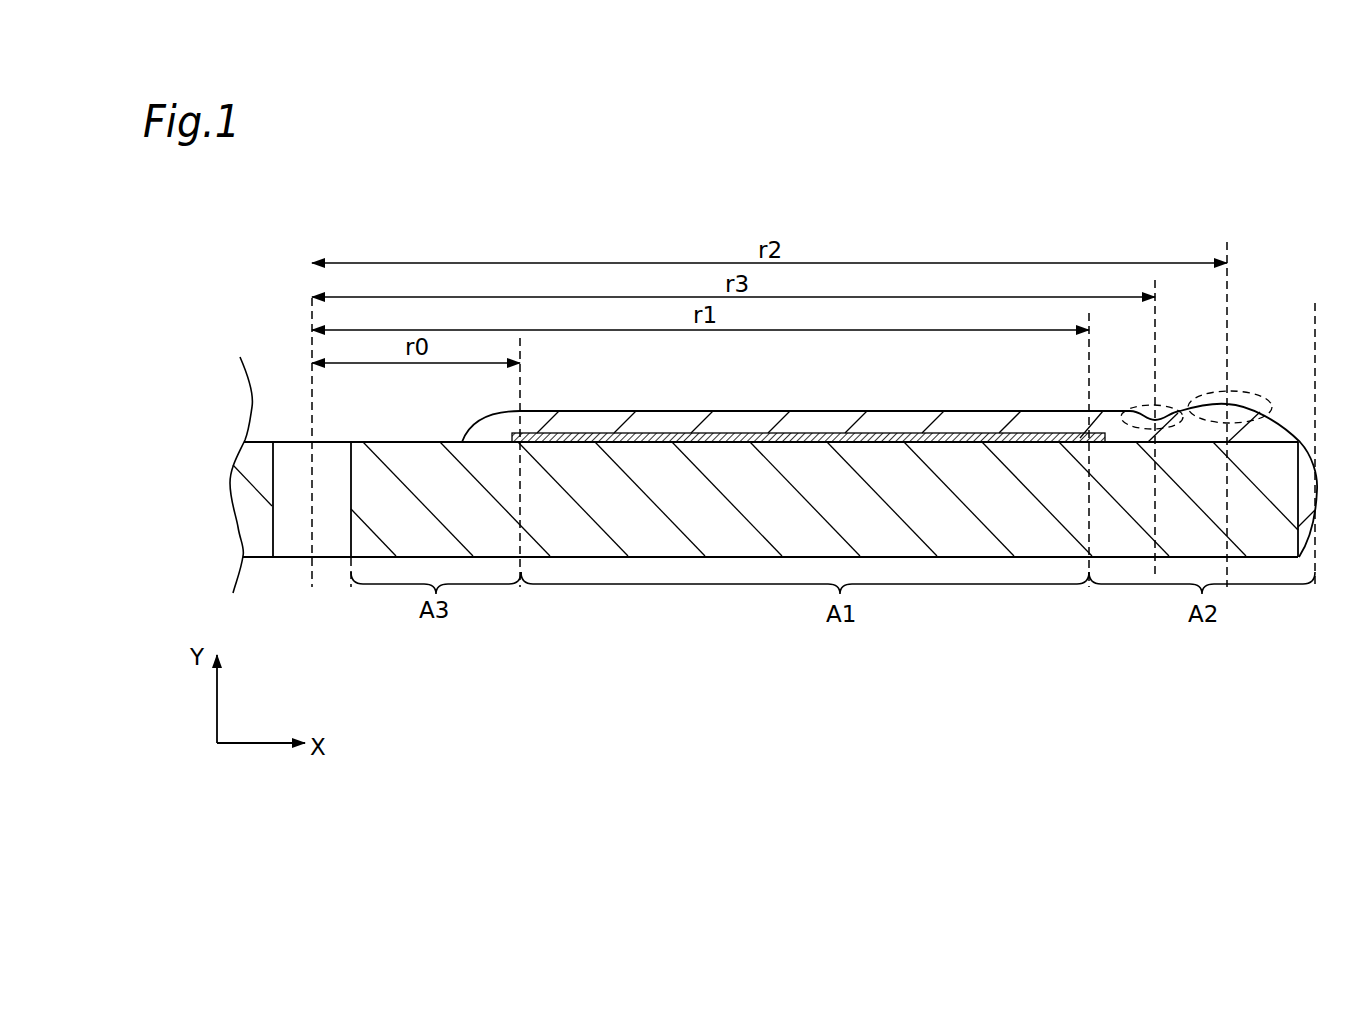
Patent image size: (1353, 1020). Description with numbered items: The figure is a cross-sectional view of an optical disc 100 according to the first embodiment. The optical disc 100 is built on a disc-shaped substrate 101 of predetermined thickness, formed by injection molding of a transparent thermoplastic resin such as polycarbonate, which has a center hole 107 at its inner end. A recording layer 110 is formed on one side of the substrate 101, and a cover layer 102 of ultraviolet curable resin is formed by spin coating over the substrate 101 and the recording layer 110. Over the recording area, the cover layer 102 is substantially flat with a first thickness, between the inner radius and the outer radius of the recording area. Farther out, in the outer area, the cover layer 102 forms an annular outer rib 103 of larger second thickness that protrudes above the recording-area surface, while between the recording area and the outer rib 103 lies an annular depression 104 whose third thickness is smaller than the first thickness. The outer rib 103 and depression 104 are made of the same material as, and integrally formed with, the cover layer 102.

The optical disc 100 is at (700, 212).
The substrate 101 is at (745, 540).
The cover layer 102 is at (684, 422).
The outer rib 103 is at (1250, 393).
The depression 104 is at (1160, 408).
The center hole 107 is at (293, 540).
The recording layer 110 is at (604, 432).